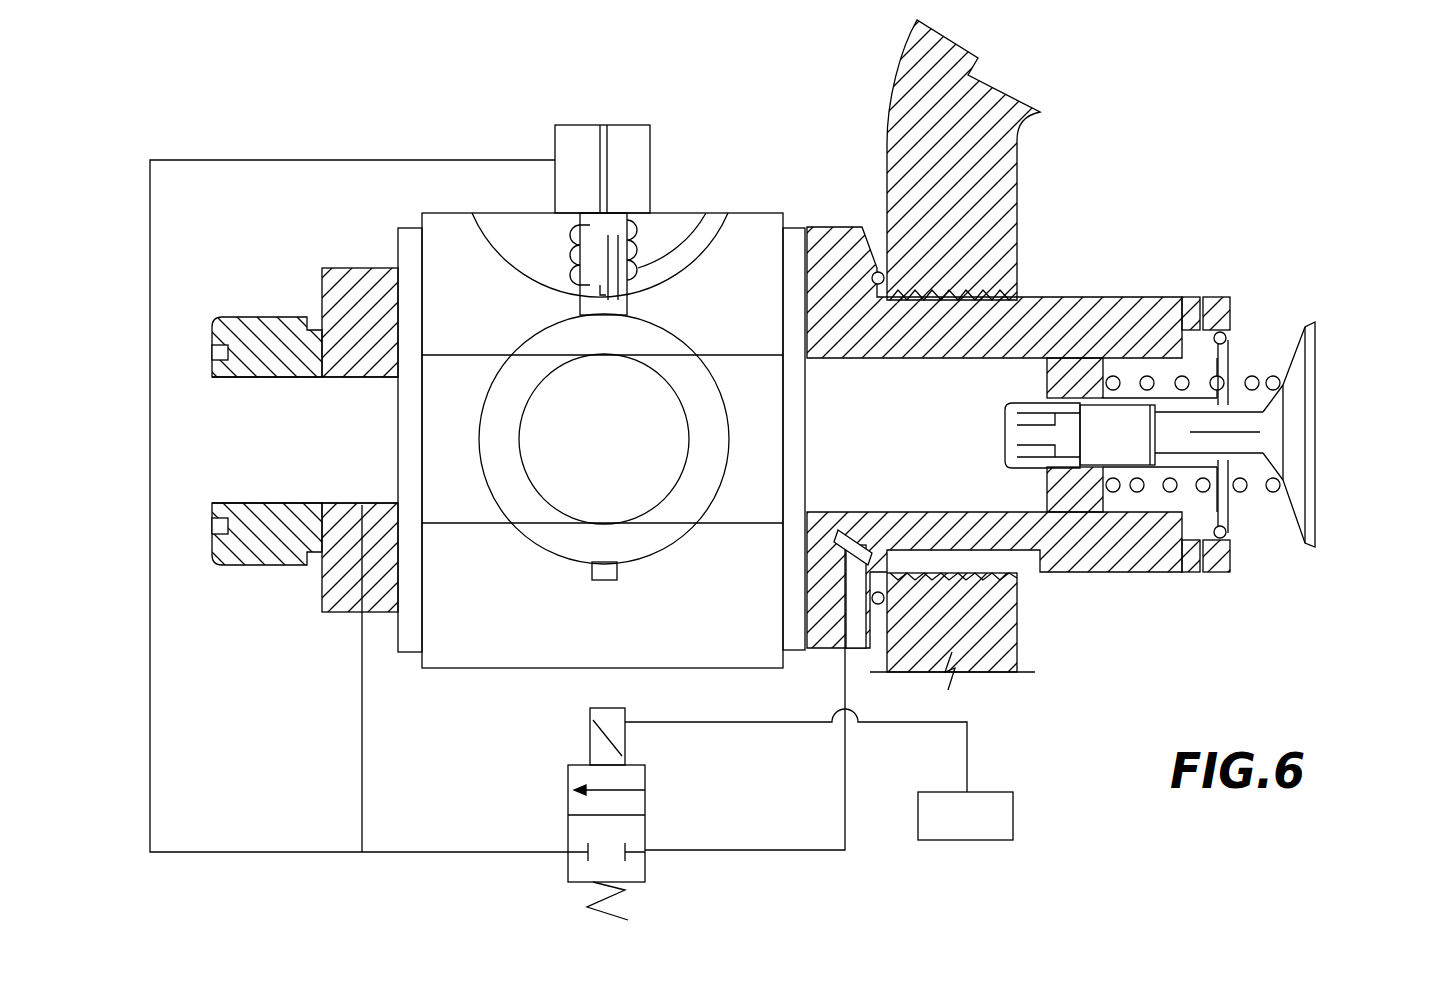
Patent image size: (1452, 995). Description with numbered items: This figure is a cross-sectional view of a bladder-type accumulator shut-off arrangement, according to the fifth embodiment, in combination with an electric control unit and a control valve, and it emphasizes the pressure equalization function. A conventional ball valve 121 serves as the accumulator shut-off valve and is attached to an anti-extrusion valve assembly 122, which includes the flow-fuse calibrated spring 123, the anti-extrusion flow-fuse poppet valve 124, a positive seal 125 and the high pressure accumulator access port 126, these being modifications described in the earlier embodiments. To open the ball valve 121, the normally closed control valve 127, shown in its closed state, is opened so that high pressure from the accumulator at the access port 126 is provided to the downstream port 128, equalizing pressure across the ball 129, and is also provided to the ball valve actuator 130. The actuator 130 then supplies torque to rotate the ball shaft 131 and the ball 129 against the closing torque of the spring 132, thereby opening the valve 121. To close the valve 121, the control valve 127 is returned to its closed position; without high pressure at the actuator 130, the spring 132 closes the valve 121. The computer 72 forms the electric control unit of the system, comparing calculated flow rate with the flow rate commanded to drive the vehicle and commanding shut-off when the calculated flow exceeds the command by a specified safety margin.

The computer 72 is at (981, 832).
The ball valve 121 is at (750, 242).
The anti-extrusion valve assembly 122 is at (1068, 298).
The flow-fuse calibrated spring 123 is at (1255, 372).
The anti-extrusion flow-fuse poppet valve 124 is at (1302, 430).
The positive seal 125 is at (1222, 540).
The accumulator access port 126 is at (1030, 573).
The control valve 127 is at (648, 866).
The downstream port 128 is at (355, 505).
The ball 129 is at (490, 385).
The ball valve actuator 130 is at (633, 153).
The ball shaft 131 is at (663, 217).
The spring 132 is at (710, 213).